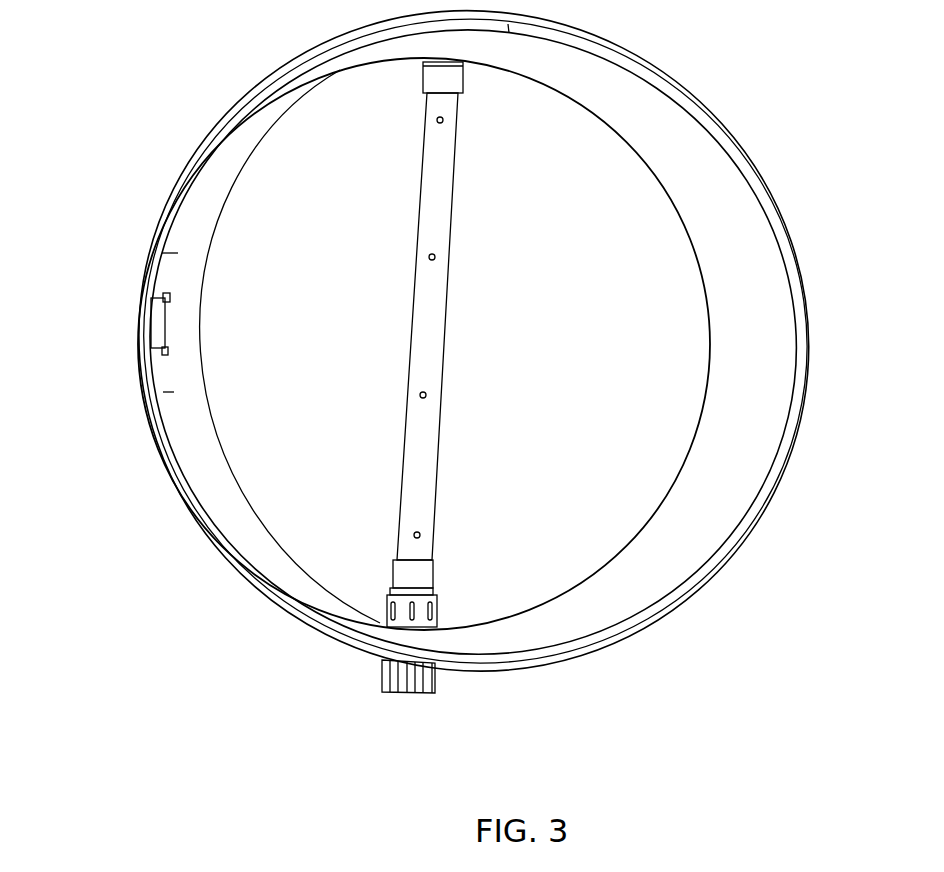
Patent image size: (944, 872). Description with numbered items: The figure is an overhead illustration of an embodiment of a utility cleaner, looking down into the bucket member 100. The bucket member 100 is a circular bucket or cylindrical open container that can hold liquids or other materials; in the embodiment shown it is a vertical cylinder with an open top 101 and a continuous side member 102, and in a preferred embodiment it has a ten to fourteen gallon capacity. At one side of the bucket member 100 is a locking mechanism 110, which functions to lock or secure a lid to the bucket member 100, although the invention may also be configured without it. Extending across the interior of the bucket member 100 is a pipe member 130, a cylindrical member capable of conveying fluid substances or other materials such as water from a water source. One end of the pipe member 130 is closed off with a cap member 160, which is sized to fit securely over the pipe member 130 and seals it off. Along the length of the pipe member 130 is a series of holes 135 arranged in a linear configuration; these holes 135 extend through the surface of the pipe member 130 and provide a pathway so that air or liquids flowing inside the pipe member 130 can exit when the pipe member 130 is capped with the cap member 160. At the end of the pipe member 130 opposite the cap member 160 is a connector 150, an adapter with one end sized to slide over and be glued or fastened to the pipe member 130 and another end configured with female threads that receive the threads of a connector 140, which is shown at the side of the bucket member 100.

The bucket member 100 is at (708, 607).
The open top 101 is at (290, 148).
The continuous side member 102 is at (822, 336).
The locking mechanism 110 is at (130, 332).
The pipe member 130 is at (466, 416).
The holes 135 is at (423, 138).
The connector 140 is at (450, 700).
The connector 150 is at (459, 566).
The cap member 160 is at (481, 100).